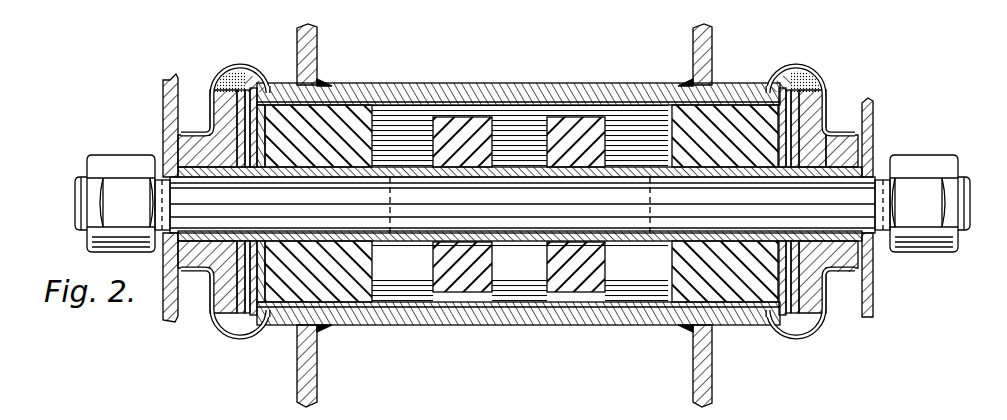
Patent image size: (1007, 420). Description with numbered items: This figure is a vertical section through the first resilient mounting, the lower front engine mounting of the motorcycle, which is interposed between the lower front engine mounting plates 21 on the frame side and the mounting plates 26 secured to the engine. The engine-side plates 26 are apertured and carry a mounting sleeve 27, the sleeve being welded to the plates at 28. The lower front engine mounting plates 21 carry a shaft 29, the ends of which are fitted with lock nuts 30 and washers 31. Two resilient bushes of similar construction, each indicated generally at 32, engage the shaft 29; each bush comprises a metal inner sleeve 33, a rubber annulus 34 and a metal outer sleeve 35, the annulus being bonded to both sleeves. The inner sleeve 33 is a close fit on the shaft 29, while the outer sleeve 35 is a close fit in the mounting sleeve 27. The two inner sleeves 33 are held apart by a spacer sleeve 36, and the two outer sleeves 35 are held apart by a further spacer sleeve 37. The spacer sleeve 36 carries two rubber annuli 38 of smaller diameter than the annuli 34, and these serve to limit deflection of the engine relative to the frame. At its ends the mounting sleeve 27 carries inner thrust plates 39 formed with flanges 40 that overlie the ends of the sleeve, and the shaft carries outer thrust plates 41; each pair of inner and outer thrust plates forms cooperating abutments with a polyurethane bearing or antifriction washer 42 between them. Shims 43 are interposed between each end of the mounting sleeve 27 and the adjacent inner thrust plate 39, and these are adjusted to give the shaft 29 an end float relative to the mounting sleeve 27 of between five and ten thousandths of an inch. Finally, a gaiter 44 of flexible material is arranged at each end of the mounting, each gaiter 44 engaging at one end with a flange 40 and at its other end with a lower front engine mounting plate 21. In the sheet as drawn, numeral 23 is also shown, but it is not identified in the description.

The lower front engine mounting plate 21 is at (170, 310).
The hub shell 23 is at (529, 327).
The mounting plate 26 is at (303, 357).
The mounting sleeve 27 is at (668, 313).
The weld 28 is at (322, 330).
The shaft 29 is at (842, 200).
The lock nut 30 is at (131, 248).
The washer 31 is at (159, 252).
The resilient bush 32 is at (253, 320).
The inner sleeve 33 is at (795, 332).
The rubber annulus 34 is at (737, 297).
The outer sleeve 35 is at (757, 300).
The spacer sleeve 36 is at (615, 262).
The spacer sleeve 37 is at (637, 305).
The rubber annulus 38 is at (455, 272).
The inner thrust plate 39 is at (783, 118).
The flange 40 is at (793, 68).
The outer thrust plate 41 is at (842, 157).
The antifriction washer 42 is at (865, 115).
The shim 43 is at (257, 318).
The gaiter 44 is at (824, 323).